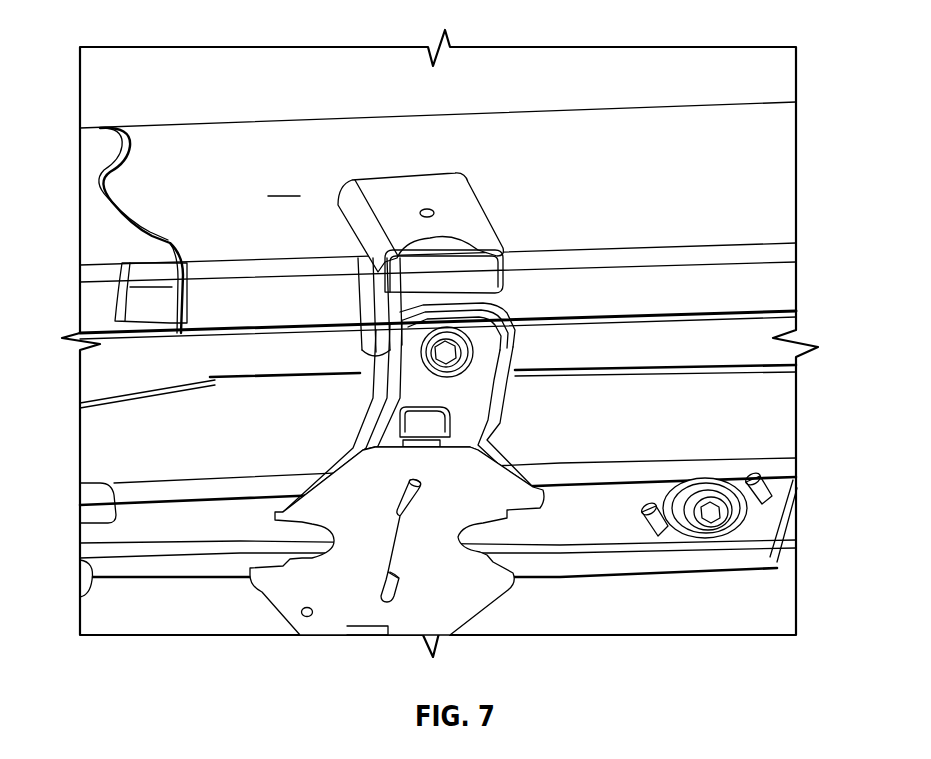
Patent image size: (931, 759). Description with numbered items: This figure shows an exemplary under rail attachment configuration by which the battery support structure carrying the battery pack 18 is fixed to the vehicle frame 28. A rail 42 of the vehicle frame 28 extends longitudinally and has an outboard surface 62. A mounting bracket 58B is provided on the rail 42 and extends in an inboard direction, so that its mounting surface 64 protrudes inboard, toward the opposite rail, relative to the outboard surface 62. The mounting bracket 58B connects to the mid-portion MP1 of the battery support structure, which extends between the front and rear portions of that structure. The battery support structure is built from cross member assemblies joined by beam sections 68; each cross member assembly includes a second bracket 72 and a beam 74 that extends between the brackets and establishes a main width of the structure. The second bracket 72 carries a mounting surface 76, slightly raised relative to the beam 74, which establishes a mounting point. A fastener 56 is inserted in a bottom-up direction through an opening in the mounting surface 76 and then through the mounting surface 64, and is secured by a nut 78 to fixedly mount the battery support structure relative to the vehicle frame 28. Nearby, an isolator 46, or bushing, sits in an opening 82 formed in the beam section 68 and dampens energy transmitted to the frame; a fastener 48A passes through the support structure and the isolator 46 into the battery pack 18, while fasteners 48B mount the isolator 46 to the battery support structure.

The battery pack 18 is at (141, 612).
The vehicle frame 28 is at (518, 70).
The rail 42 is at (338, 142).
The isolator 46 is at (723, 516).
The fastener 48A is at (728, 528).
The fastener 48B is at (773, 502).
The fastener 56 is at (458, 362).
The mounting bracket 58B is at (420, 208).
The outboard surface 62 is at (284, 183).
The mounting surface 64 is at (375, 318).
The beam section 68 is at (175, 498).
The second bracket 72 is at (378, 393).
The beam 74 is at (447, 428).
The mounting surface 76 is at (482, 302).
The nut 78 is at (427, 290).
The opening 82 is at (673, 538).
The mid-portion MP1 is at (358, 653).